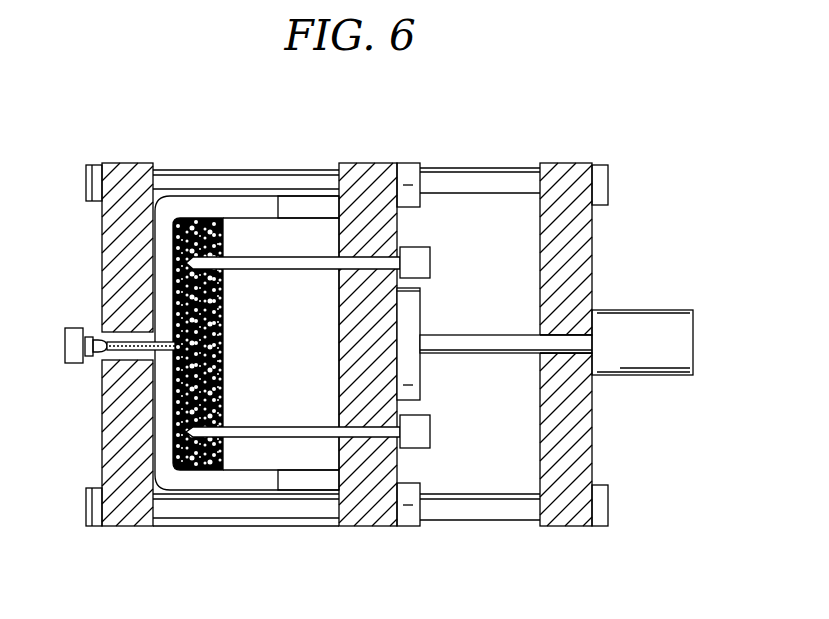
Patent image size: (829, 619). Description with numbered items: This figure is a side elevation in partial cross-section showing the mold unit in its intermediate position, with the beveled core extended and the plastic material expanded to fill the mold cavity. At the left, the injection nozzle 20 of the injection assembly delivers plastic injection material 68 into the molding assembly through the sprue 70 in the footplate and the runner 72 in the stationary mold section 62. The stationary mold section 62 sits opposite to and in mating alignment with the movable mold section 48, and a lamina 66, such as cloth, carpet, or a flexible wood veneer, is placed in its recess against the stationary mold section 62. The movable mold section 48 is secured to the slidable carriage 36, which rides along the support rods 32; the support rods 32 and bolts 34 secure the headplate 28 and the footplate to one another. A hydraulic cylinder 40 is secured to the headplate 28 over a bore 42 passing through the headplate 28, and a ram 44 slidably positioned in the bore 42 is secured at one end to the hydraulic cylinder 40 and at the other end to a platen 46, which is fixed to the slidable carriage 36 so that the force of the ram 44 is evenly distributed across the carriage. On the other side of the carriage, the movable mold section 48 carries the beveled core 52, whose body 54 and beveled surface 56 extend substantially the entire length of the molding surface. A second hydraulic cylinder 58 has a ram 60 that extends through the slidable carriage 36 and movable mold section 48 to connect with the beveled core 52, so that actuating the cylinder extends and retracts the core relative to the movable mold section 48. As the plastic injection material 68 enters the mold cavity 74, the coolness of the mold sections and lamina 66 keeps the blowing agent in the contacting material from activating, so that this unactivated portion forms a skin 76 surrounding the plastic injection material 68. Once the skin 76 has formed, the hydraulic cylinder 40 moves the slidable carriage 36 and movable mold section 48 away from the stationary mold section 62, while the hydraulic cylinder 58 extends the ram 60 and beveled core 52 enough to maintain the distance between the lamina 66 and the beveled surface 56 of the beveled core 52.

The injection nozzle 20 is at (70, 328).
The headplate 28 is at (594, 448).
The support rods 32 is at (283, 170).
The bolts 34 is at (608, 165).
The slidable carriage 36 is at (378, 163).
The hydraulic cylinder 40 is at (693, 340).
The bore 42 is at (594, 333).
The ram 44 is at (593, 355).
The platen 46 is at (420, 322).
The movable mold section 48 is at (313, 472).
The beveled core 52 is at (250, 271).
The body 54 is at (247, 257).
The beveled surface 56 is at (223, 237).
The hydraulic cylinder 58 is at (416, 247).
The ram 60 is at (320, 272).
The stationary mold section 62 is at (240, 495).
The lamina 66 is at (223, 337).
The plastic injection material 68 is at (223, 398).
The sprue 70 is at (103, 378).
The runner 72 is at (118, 342).
The mold cavity 74 is at (210, 218).
The skin 76 is at (223, 372).